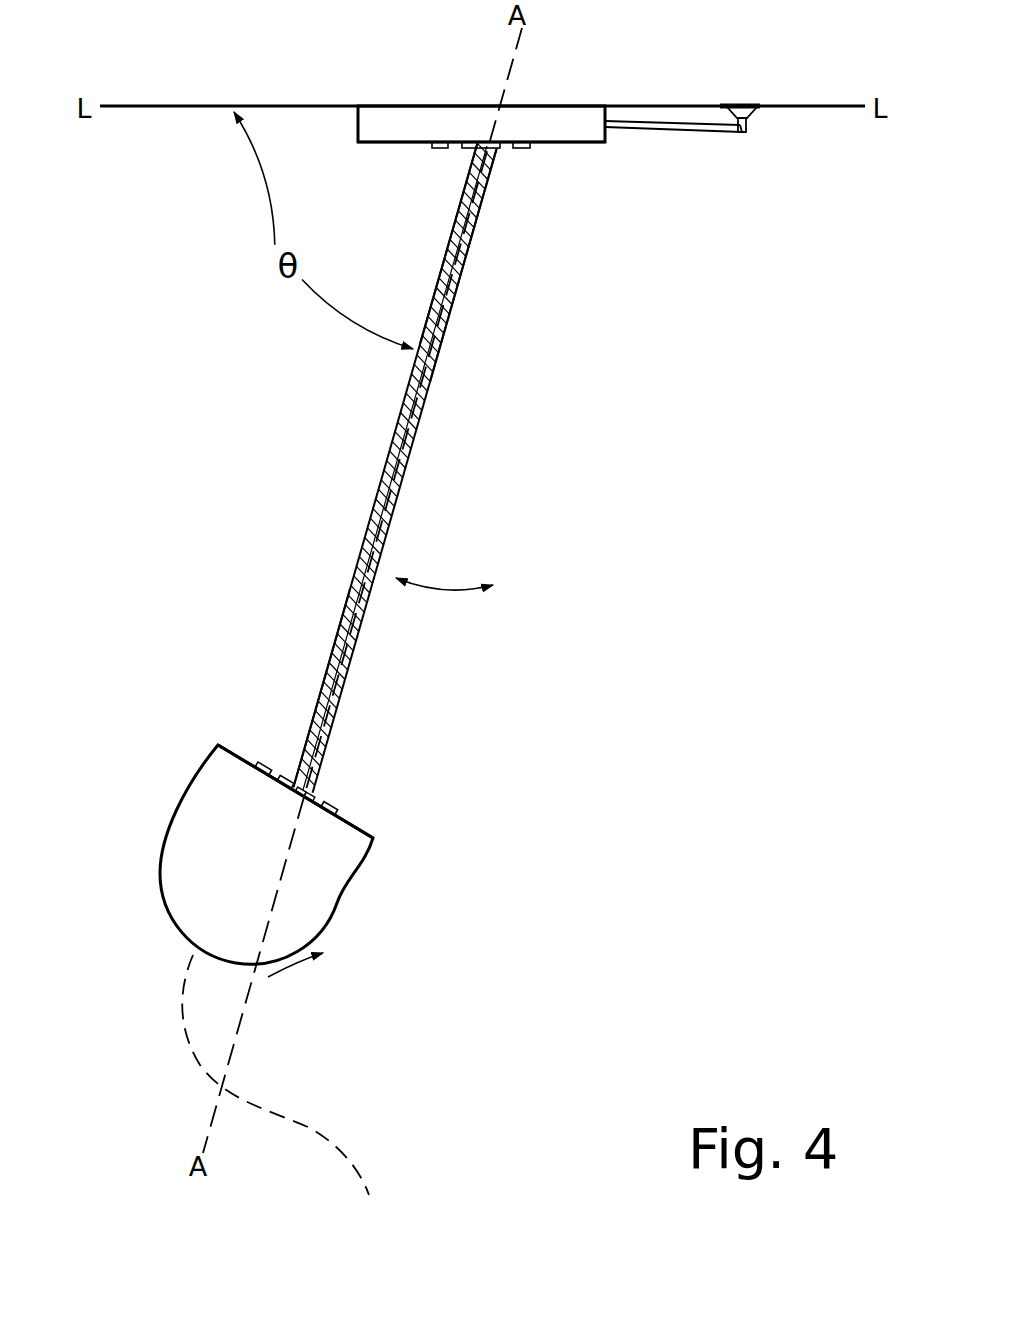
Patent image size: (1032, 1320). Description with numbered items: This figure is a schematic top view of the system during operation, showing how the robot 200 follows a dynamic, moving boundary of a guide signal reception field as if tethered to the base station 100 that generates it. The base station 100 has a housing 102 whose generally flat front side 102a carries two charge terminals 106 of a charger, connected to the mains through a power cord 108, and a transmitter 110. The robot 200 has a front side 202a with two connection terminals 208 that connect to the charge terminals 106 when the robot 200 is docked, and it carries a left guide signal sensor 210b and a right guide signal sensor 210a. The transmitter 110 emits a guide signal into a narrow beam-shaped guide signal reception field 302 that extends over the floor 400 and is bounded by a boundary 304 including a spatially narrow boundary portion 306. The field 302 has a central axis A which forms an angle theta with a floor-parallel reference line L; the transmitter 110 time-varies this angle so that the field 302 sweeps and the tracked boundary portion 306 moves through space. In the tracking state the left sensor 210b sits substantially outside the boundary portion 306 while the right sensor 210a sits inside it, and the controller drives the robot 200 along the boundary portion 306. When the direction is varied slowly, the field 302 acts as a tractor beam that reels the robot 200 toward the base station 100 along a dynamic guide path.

The base station 100 is at (567, 130).
The housing 102 is at (376, 122).
The front side 102a is at (373, 152).
The charge terminals 106 is at (432, 152).
The power cord 108 is at (717, 133).
The transmitter 110 is at (495, 151).
The robot 200 is at (177, 944).
The front side 202a is at (230, 742).
The connection terminals 208 is at (260, 758).
The right guide signal sensor 210a is at (307, 806).
The left guide signal sensor 210b is at (278, 789).
The guide signal reception field 302 is at (392, 480).
The boundary 304 is at (418, 356).
The boundary portion 306 is at (345, 608).
The floor 400 is at (731, 398).